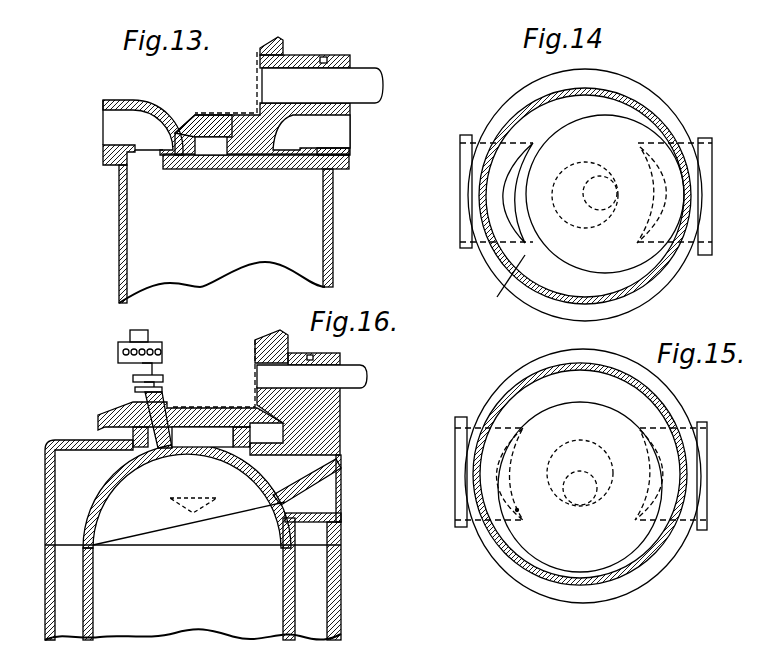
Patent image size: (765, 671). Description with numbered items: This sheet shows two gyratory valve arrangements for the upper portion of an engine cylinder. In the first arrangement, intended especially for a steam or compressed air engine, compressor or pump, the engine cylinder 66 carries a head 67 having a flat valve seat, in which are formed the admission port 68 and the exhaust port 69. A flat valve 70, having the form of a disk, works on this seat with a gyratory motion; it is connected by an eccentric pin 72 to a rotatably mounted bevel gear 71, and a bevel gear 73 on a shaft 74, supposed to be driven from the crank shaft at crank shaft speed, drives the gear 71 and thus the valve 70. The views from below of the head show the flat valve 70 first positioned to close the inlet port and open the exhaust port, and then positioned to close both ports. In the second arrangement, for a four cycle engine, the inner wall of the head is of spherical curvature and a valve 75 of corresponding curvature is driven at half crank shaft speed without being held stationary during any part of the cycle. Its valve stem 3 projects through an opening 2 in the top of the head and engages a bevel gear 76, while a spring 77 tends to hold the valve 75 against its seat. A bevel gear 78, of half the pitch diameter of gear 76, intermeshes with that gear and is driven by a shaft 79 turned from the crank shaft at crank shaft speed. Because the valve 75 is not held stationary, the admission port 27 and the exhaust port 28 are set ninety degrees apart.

In FIG. 13, the opening 2 is at (205, 152).
In FIG. 16, the opening 2 is at (217, 448).
In FIG. 16, the valve stem 3 is at (157, 415).
In FIG. 16, the admission port 27 is at (283, 508).
In FIG. 16, the exhaust port 28 is at (197, 499).
In FIG. 13, the engine cylinder 66 is at (330, 246).
In FIG. 14, the engine cylinder 66 is at (658, 122).
In FIG. 15, the engine cylinder 66 is at (673, 425).
In FIG. 13, the cylinder head 67 is at (133, 158).
In FIG. 14, the cylinder head 67 is at (504, 286).
In FIG. 13, the admission port 68 is at (342, 132).
In FIG. 14, the admission port 68 is at (655, 197).
In FIG. 15, the admission port 68 is at (647, 490).
In FIG. 13, the exhaust port 69 is at (143, 127).
In FIG. 14, the exhaust port 69 is at (513, 187).
In FIG. 15, the exhaust port 69 is at (512, 467).
In FIG. 13, the flat valve 70 is at (292, 170).
In FIG. 14, the flat valve 70 is at (605, 194).
In FIG. 15, the flat valve 70 is at (580, 487).
In FIG. 13, the bevel gear 71 is at (190, 114).
In FIG. 13, the eccentric pin 72 is at (237, 170).
In FIG. 13, the bevel gear 73 is at (273, 45).
In FIG. 13, the shaft 74 is at (322, 85).
In FIG. 16, the valve 75 is at (133, 523).
In FIG. 16, the bevel gear 76 is at (227, 410).
In FIG. 16, the spring 77 is at (133, 378).
In FIG. 16, the bevel gear 78 is at (265, 338).
In FIG. 16, the shaft 79 is at (350, 375).